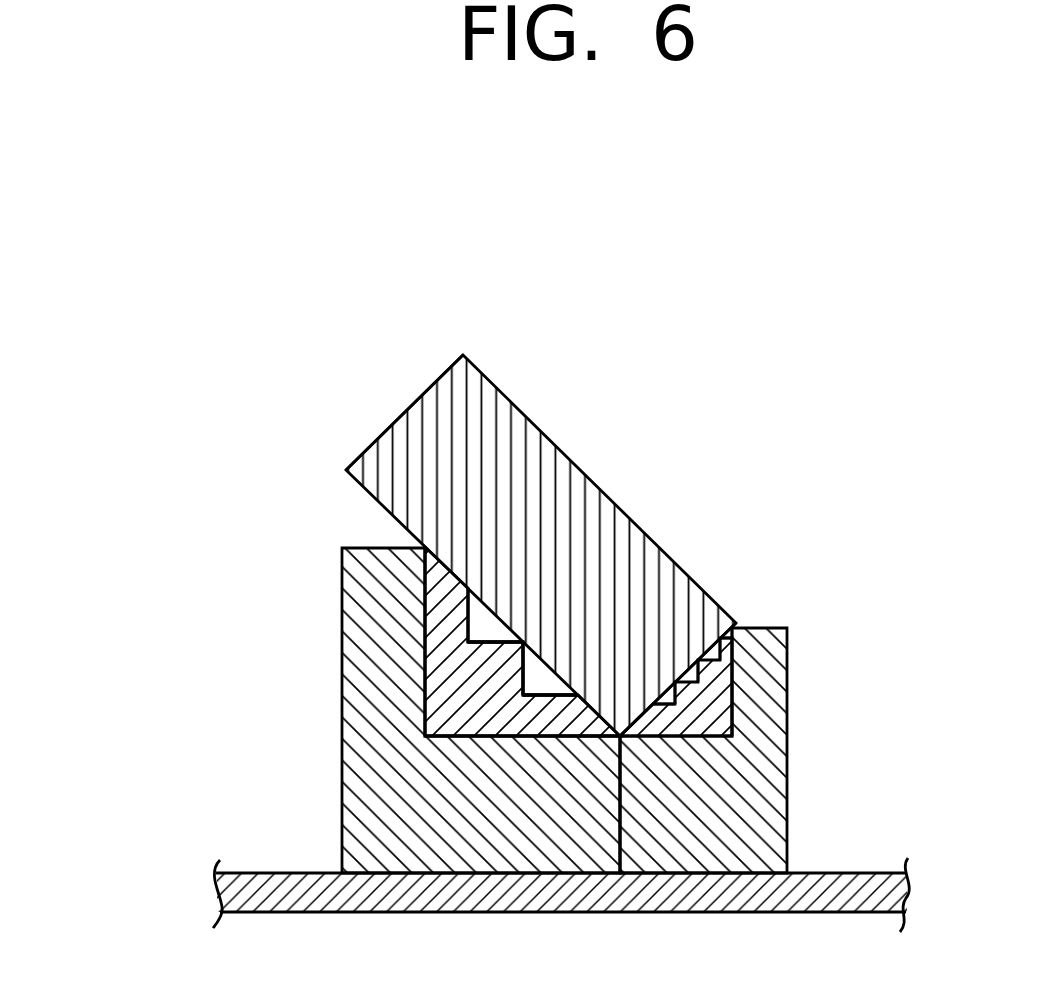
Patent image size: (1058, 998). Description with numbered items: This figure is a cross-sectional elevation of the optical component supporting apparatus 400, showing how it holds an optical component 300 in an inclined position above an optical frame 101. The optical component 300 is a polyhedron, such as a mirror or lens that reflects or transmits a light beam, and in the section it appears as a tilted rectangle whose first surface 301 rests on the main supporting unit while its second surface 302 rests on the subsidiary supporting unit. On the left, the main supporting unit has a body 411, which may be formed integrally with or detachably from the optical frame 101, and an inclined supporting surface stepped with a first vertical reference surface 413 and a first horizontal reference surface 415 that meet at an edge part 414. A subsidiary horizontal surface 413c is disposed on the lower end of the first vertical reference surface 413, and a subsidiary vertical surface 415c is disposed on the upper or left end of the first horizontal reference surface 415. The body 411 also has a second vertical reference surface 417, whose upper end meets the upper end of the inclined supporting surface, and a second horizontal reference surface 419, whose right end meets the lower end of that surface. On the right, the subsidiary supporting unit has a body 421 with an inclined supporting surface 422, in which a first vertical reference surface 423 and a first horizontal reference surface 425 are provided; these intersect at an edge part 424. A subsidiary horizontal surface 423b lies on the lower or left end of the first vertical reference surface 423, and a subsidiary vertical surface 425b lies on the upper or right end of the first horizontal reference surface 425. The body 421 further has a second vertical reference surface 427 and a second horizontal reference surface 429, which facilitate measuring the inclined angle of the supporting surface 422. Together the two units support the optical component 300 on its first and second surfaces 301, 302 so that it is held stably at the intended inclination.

The optical frame 101 is at (257, 898).
The optical component 300 is at (490, 420).
The first surface 301 is at (365, 489).
The second surface 302 is at (712, 665).
The optical component supporting apparatus 400 is at (932, 252).
The body 411 is at (385, 810).
The first vertical reference surface 413 is at (520, 680).
The subsidiary horizontal surface 413c is at (527, 690).
The edge part 414 is at (523, 642).
The first horizontal reference surface 415 is at (497, 640).
The subsidiary vertical surface 415c is at (465, 601).
The second vertical reference surface 417 is at (440, 643).
The second horizontal reference surface 419 is at (452, 736).
The body 421 is at (768, 819).
The supporting surface 422 is at (722, 636).
The first vertical reference surface 423 is at (651, 700).
The subsidiary horizontal surface 423b is at (672, 712).
The edge part 424 is at (685, 680).
The first horizontal reference surface 425 is at (698, 684).
The subsidiary vertical surface 425b is at (712, 660).
The second vertical reference surface 427 is at (740, 695).
The second horizontal reference surface 429 is at (645, 740).